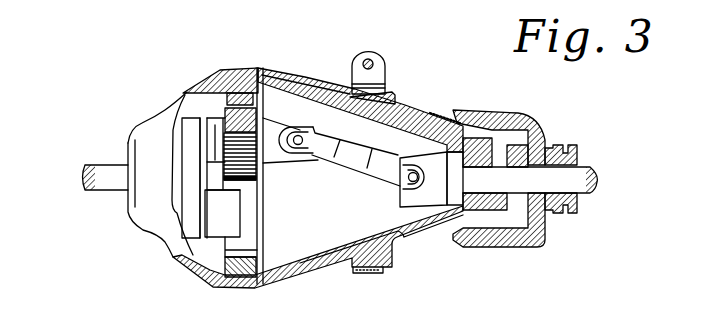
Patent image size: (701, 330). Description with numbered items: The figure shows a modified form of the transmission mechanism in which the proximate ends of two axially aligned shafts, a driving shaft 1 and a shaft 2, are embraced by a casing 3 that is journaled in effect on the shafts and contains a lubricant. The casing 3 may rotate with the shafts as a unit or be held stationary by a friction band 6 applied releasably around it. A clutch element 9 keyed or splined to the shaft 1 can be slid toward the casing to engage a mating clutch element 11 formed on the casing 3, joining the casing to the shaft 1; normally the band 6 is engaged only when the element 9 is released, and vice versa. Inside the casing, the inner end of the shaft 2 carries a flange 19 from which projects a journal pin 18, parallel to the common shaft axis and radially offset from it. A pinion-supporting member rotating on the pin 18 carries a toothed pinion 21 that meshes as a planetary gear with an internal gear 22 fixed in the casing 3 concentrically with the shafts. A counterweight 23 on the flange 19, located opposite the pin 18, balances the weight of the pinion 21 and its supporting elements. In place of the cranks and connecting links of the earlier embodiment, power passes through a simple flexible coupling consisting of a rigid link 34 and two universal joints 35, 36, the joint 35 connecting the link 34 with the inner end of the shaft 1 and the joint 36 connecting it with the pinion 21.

The shaft 1 is at (585, 172).
The shaft 2 is at (106, 186).
The casing 3 is at (210, 80).
The friction band 6 is at (370, 274).
The clutch element 9 is at (518, 117).
The clutch element 11 is at (447, 121).
The journal pin 18 is at (217, 122).
The flange 19 is at (192, 232).
The toothed pinion 21 is at (258, 180).
The internal gear 22 is at (242, 267).
The counterweight 23 is at (228, 222).
The rigid link 34 is at (357, 168).
The universal joint 35 is at (413, 189).
The universal joint 36 is at (300, 136).